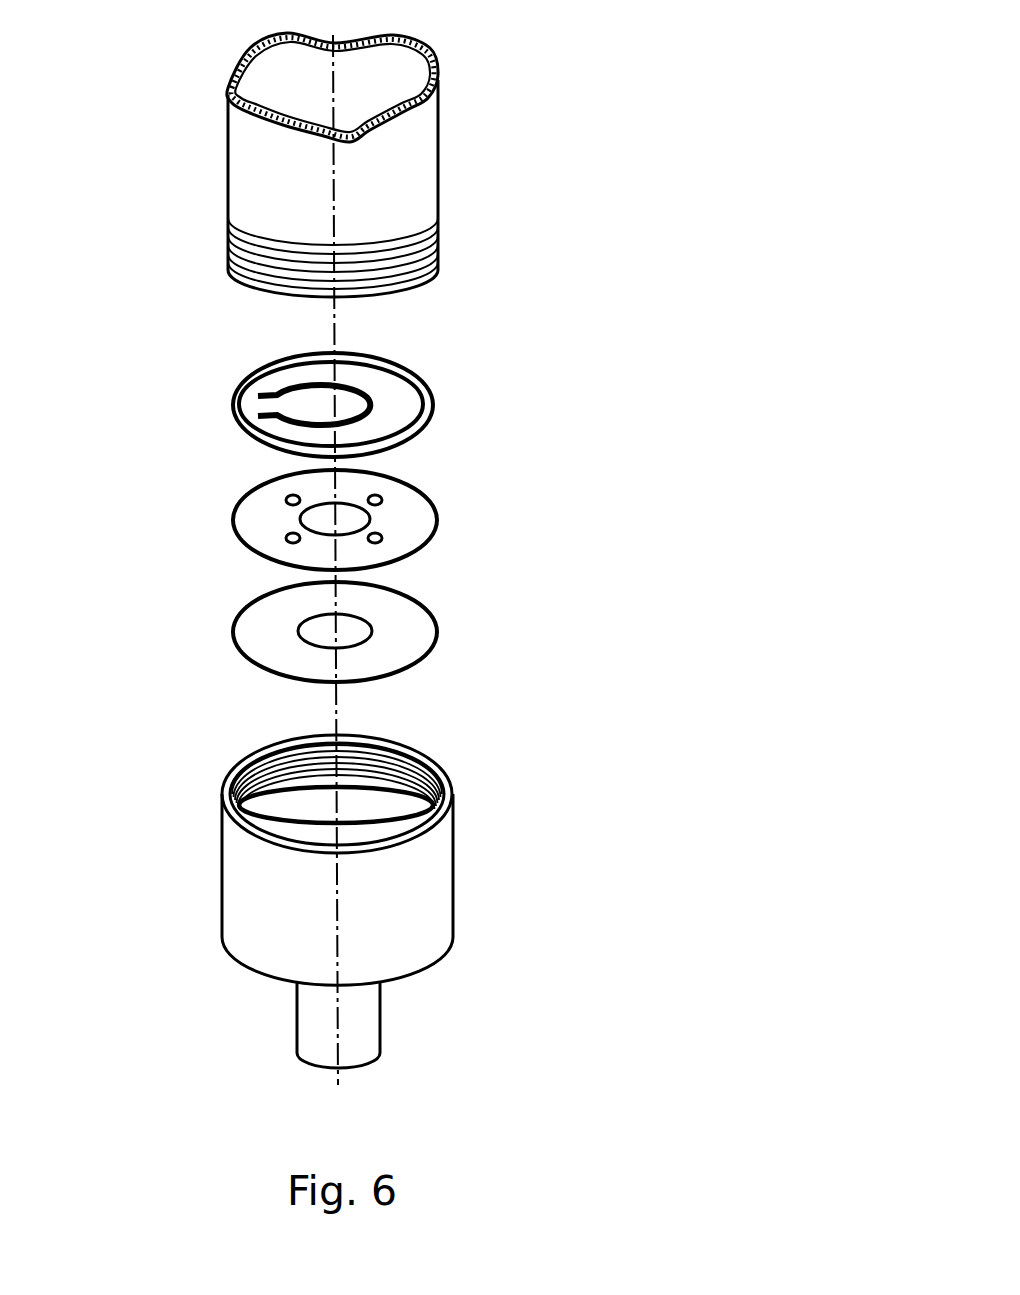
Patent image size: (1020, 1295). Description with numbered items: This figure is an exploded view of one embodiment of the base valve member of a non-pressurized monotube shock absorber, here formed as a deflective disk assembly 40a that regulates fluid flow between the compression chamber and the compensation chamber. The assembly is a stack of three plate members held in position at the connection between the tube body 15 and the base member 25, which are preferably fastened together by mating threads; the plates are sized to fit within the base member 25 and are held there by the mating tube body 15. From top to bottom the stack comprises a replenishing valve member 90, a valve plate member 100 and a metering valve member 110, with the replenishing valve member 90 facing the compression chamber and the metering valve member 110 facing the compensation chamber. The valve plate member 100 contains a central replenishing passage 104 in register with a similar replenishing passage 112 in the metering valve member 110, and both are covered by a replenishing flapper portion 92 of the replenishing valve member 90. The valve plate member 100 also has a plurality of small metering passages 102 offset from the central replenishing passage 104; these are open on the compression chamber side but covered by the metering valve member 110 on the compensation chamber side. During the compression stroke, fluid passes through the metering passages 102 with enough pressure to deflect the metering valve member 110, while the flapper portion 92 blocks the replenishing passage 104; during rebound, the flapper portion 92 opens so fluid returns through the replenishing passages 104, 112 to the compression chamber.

The tube body 15 is at (425, 150).
The base member 25 is at (444, 877).
The deflective disk assembly 40a is at (594, 397).
The replenishing valve member 90 is at (425, 395).
The replenishing flapper portion 92 is at (310, 398).
The valve plate member 100 is at (435, 512).
The metering passages 102 is at (291, 500).
The central replenishing passage 104 is at (303, 521).
The metering valve member 110 is at (437, 622).
The replenishing passage 112 is at (305, 632).